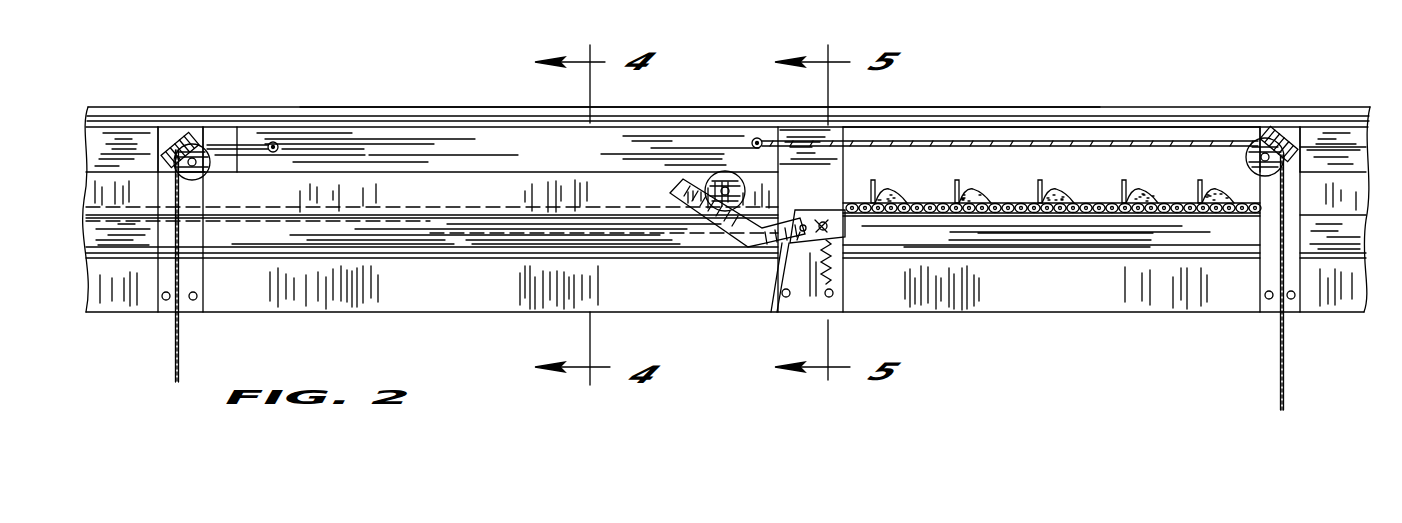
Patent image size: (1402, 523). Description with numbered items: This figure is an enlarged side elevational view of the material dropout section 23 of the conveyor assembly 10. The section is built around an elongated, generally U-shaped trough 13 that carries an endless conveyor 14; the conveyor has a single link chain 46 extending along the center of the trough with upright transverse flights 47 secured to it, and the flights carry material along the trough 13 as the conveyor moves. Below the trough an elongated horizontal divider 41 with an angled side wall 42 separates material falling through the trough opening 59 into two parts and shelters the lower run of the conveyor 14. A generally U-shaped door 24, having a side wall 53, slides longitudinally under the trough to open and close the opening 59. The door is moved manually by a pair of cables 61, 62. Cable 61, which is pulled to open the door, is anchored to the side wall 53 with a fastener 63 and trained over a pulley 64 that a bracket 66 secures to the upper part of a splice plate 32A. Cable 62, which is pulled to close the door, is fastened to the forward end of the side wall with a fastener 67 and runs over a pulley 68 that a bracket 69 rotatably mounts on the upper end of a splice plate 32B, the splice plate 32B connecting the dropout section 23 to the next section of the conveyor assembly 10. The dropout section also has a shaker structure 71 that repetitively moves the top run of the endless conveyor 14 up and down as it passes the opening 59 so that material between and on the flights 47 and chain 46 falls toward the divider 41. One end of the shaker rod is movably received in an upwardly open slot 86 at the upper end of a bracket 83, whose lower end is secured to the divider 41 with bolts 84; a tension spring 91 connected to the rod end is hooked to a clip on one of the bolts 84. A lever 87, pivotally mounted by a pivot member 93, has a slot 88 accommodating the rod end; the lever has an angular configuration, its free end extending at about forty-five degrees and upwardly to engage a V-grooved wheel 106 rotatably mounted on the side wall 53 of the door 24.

The conveyor assembly 10 is at (108, 102).
The trough 13 is at (862, 137).
The endless conveyor 14 is at (1090, 205).
The material dropout section 23 is at (460, 106).
The door 24 is at (383, 152).
The splice plate 32A is at (158, 140).
The splice plate 32B is at (1293, 160).
The divider 41 is at (426, 282).
The side wall 42 is at (1097, 236).
The link chain 46 is at (1005, 204).
The flights 47 is at (878, 182).
The side wall 53 is at (668, 150).
The opening 59 is at (970, 160).
The cable 61 is at (176, 364).
The cable 62 is at (1280, 372).
The fastener 63 is at (275, 142).
The pulley 64 is at (207, 172).
The bracket 66 is at (180, 138).
The fastener 67 is at (757, 137).
The pulley 68 is at (1250, 162).
The bracket 69 is at (1275, 137).
The shaker structure 71 is at (660, 280).
The bracket 83 is at (778, 280).
The bolts 84 is at (784, 297).
The slot 86 is at (840, 212).
The lever 87 is at (742, 230).
The slot 88 is at (833, 228).
The tension spring 91 is at (832, 270).
The pivot member 93 is at (798, 234).
The wheel 106 is at (726, 171).